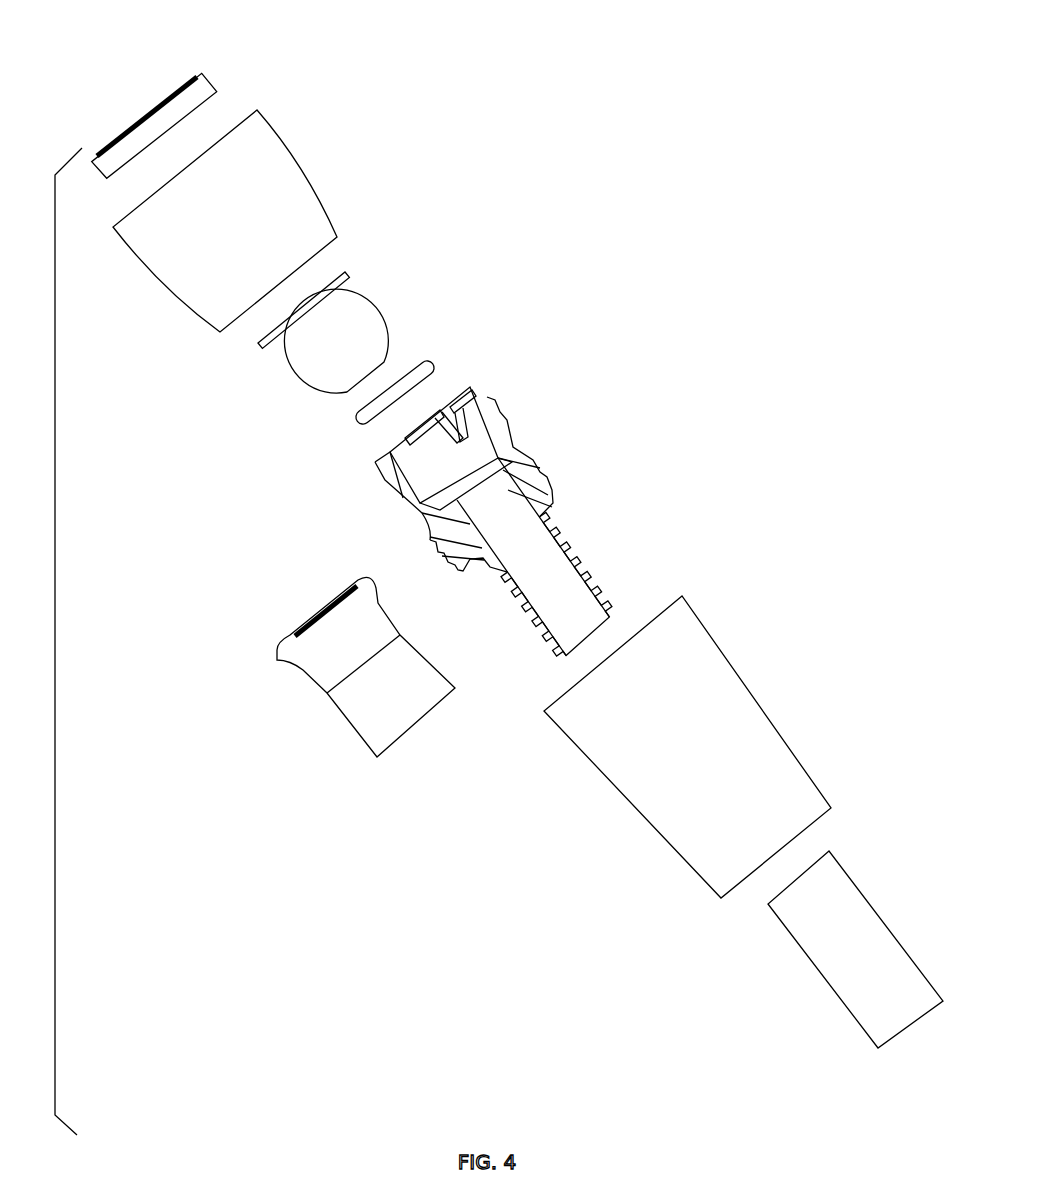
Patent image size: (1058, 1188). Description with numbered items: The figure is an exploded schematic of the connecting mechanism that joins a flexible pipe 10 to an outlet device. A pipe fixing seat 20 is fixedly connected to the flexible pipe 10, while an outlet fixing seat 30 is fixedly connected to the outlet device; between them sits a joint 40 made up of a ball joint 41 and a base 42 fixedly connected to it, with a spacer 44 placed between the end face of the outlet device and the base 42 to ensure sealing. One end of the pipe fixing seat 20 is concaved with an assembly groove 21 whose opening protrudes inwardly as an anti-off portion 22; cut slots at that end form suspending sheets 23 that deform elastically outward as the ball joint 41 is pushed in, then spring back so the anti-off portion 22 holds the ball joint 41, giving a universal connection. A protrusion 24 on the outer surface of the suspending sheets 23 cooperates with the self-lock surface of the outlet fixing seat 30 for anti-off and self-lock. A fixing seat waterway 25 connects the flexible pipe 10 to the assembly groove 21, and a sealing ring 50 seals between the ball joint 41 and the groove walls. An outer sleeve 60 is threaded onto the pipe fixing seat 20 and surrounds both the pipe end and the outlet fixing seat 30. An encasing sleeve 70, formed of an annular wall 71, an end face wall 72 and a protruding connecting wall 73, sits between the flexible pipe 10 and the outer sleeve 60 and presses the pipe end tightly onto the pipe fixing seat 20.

The flexible pipe 10 is at (861, 973).
The pipe fixing seat 20 is at (514, 521).
The assembly groove 21 is at (485, 440).
The anti-off portion 22 is at (397, 450).
The suspending sheets 23 is at (402, 463).
The protrusion 24 is at (387, 480).
The fixing seat waterway 25 is at (570, 608).
The outlet fixing seat 30 is at (287, 170).
The joint 40 is at (310, 360).
The ball joint 41 is at (365, 330).
The base 42 is at (347, 273).
The spacer 44 is at (205, 92).
The sealing ring 50 is at (437, 365).
The outer sleeve 60 is at (725, 723).
The encasing sleeve 70 is at (309, 670).
The annular wall 71 is at (328, 688).
The end face wall 72 is at (290, 635).
The connecting wall 73 is at (277, 660).